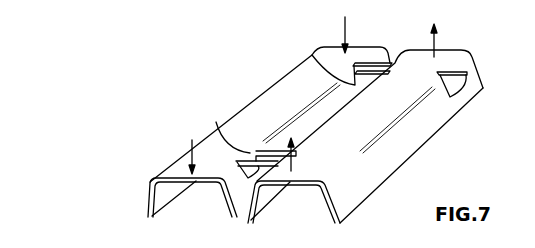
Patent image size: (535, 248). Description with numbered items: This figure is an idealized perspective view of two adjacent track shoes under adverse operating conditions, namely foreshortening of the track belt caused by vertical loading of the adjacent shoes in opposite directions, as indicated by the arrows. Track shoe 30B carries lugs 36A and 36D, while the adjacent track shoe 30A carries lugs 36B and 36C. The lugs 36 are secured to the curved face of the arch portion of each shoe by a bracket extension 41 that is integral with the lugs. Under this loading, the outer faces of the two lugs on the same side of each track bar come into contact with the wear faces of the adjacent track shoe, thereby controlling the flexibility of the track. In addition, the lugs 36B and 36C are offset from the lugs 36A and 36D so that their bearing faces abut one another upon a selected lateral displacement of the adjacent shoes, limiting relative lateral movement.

The track shoe 30A is at (376, 136).
The track shoe 30B is at (258, 101).
The lug 36 is at (467, 72).
The lug 36A is at (383, 62).
The lug 36B is at (314, 58).
The lug 36C is at (237, 134).
The lug 36D is at (250, 172).
The bracket extension 41 is at (412, 146).